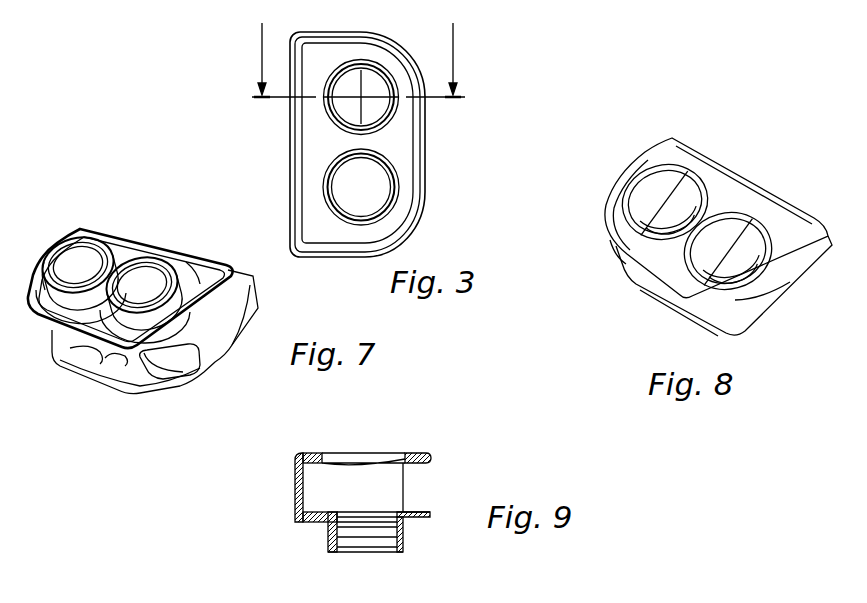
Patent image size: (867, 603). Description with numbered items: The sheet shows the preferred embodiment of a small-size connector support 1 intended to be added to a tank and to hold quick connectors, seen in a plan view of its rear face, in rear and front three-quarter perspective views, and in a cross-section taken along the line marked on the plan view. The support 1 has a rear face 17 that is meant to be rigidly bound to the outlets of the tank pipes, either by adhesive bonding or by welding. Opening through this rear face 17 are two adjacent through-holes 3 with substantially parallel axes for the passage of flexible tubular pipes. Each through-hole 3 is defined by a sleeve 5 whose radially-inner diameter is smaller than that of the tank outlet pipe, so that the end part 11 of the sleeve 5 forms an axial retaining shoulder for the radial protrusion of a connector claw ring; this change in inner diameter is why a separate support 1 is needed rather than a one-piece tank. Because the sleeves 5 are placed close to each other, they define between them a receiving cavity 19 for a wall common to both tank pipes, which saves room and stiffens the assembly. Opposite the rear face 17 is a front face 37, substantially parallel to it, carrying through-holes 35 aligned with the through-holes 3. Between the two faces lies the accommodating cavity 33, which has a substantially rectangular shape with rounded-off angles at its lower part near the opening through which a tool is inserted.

In FIG. 3, the connector support 1 is at (377, 140).
In FIG. 7, the connector support 1 is at (152, 328).
In FIG. 8, the connector support 1 is at (682, 210).
In FIG. 9, the connector support 1 is at (341, 494).
In FIG. 7, the through-hole 3 is at (73, 257).
In FIG. 9, the through-hole 3 is at (390, 553).
In FIG. 7, the sleeve 5 is at (193, 262).
In FIG. 9, the sleeve 5 is at (405, 535).
In FIG. 7, the end part of the sleeve 11 is at (47, 258).
In FIG. 9, the end part of the sleeve 11 is at (328, 553).
In FIG. 7, the rear face 17 is at (204, 262).
In FIG. 9, the rear face 17 is at (315, 527).
In FIG. 3, the receiving cavity 19 is at (357, 145).
In FIG. 7, the accommodating cavity 33 is at (155, 332).
In FIG. 8, the accommodating cavity 33 is at (721, 286).
In FIG. 9, the accommodating cavity 33 is at (392, 487).
In FIG. 7, the through-hole 35 is at (175, 369).
In FIG. 8, the through-hole 35 is at (638, 207).
In FIG. 9, the through-hole 35 is at (346, 455).
In FIG. 8, the front face 37 is at (667, 158).
In FIG. 9, the front face 37 is at (412, 450).